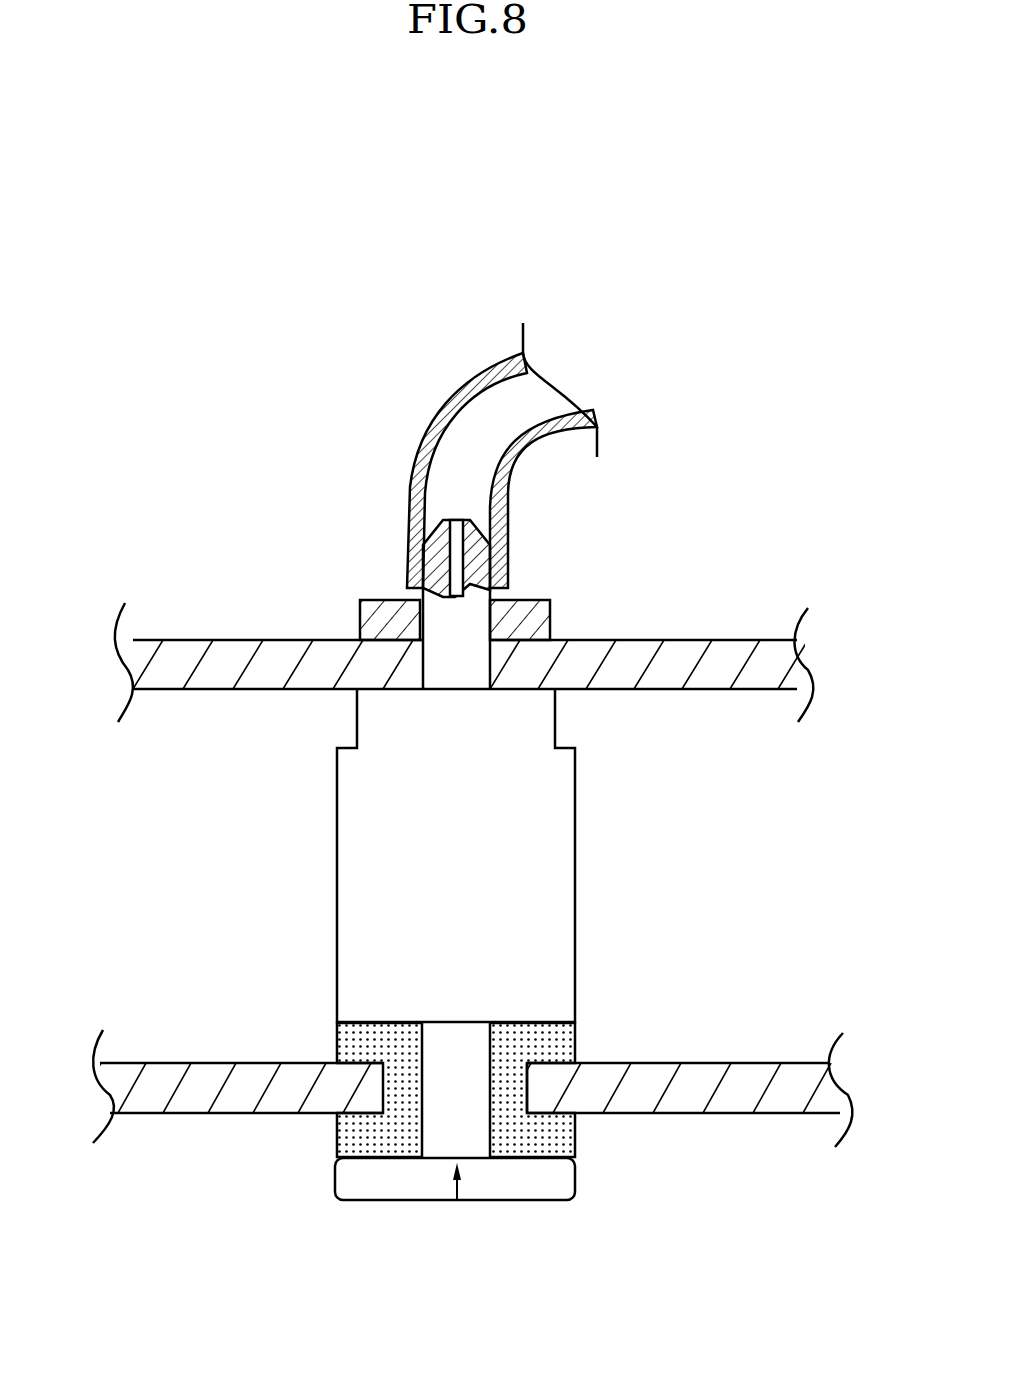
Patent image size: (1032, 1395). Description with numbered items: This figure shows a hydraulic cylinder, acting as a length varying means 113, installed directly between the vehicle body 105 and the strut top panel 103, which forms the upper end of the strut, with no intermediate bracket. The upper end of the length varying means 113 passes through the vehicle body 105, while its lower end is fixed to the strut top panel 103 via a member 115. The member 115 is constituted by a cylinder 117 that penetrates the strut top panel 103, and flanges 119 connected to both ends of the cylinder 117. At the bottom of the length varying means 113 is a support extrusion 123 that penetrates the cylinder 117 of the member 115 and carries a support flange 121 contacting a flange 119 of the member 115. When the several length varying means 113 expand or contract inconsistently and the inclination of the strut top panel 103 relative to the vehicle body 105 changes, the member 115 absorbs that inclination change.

The strut top panel 103 is at (212, 1093).
The vehicle body 105 is at (255, 650).
The length varying means 113 is at (300, 850).
The member 115 is at (820, 1170).
The cylinder 117 is at (567, 1100).
The flanges 119 is at (575, 1045).
The support flange 121 is at (350, 1182).
The support extrusion 123 is at (457, 1200).